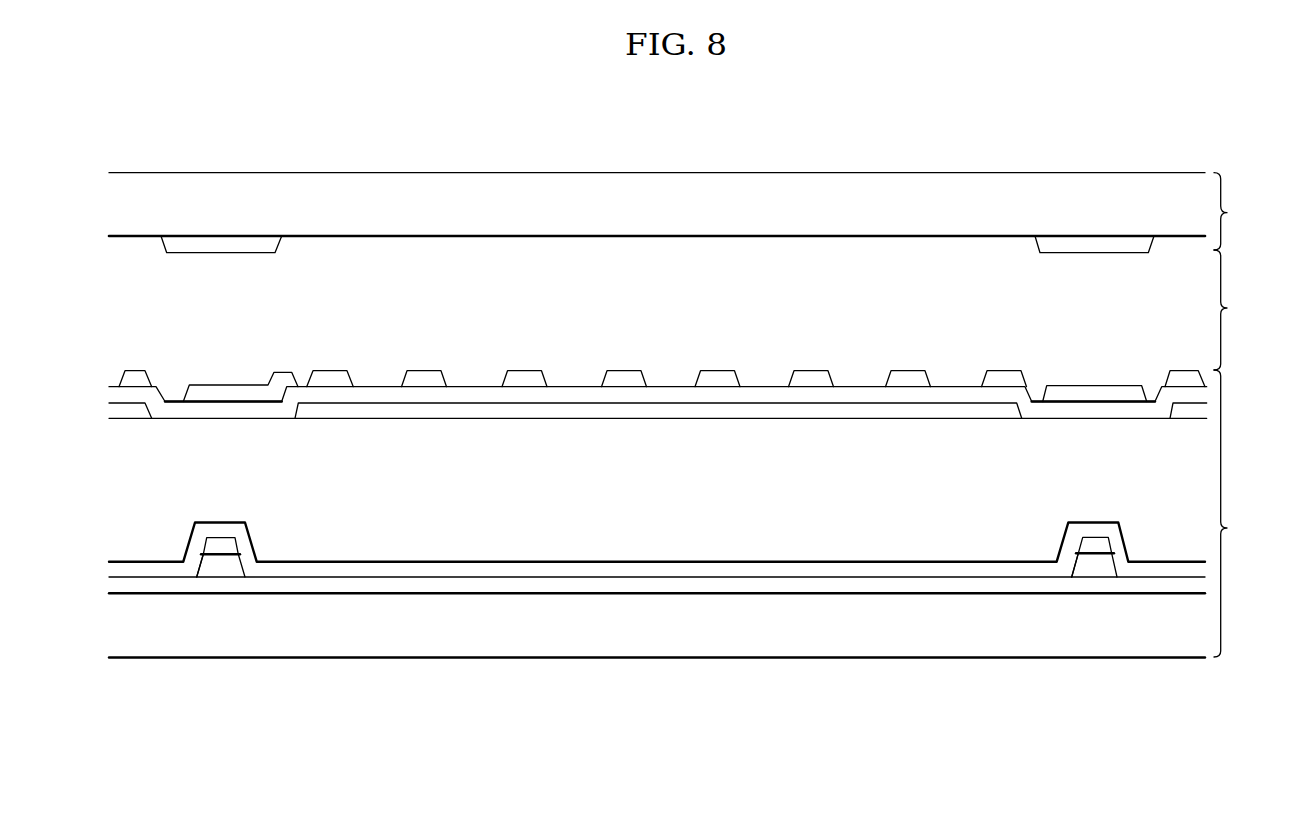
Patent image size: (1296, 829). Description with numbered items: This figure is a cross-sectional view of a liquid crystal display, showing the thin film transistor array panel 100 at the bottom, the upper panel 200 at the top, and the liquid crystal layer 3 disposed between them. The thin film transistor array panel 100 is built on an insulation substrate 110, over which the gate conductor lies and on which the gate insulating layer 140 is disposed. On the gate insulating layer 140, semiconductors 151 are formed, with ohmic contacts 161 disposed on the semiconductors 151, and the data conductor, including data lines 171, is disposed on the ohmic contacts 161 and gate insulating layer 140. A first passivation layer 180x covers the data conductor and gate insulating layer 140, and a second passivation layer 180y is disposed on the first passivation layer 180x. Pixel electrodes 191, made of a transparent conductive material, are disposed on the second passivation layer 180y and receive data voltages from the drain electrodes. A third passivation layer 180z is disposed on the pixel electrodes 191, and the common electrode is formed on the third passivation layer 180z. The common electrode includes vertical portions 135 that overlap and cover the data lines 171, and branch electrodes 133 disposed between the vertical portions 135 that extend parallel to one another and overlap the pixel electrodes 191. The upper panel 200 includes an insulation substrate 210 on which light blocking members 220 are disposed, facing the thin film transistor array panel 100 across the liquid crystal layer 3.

The thin film transistor array panel 100 is at (1239, 513).
The insulation substrate 110 is at (503, 638).
The branch electrode 133 is at (133, 375).
The vertical portion 135 is at (224, 392).
The gate insulating layer 140 is at (598, 588).
The semiconductor 151 is at (240, 570).
The ohmic contact 161 is at (222, 558).
The data line 171 is at (208, 545).
The first passivation layer 180x is at (689, 570).
The second passivation layer 180y is at (362, 546).
The third passivation layer 180z is at (668, 397).
The pixel electrode 191 is at (760, 410).
The upper panel 200 is at (1239, 211).
The insulation substrate 210 is at (527, 185).
The light blocking member 220 is at (237, 245).
The liquid crystal layer 3 is at (1230, 310).